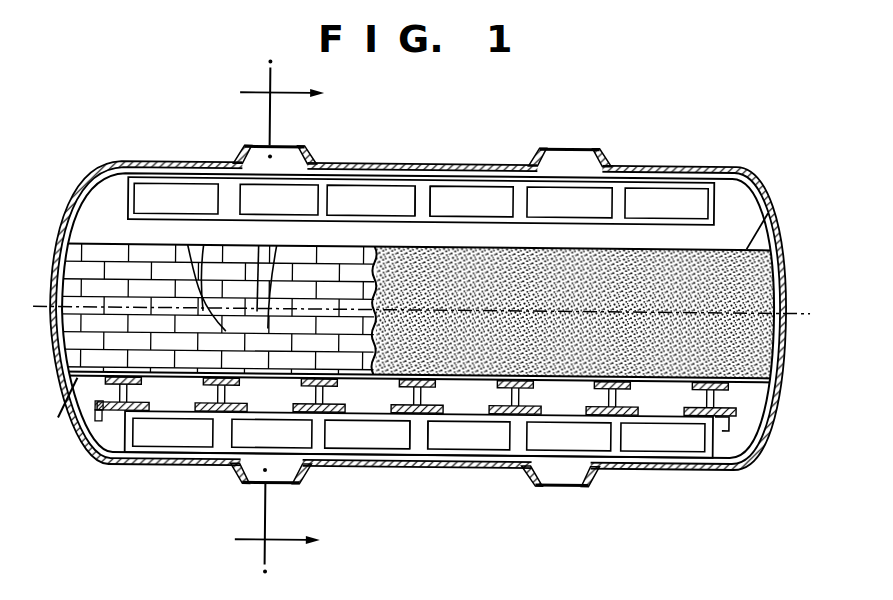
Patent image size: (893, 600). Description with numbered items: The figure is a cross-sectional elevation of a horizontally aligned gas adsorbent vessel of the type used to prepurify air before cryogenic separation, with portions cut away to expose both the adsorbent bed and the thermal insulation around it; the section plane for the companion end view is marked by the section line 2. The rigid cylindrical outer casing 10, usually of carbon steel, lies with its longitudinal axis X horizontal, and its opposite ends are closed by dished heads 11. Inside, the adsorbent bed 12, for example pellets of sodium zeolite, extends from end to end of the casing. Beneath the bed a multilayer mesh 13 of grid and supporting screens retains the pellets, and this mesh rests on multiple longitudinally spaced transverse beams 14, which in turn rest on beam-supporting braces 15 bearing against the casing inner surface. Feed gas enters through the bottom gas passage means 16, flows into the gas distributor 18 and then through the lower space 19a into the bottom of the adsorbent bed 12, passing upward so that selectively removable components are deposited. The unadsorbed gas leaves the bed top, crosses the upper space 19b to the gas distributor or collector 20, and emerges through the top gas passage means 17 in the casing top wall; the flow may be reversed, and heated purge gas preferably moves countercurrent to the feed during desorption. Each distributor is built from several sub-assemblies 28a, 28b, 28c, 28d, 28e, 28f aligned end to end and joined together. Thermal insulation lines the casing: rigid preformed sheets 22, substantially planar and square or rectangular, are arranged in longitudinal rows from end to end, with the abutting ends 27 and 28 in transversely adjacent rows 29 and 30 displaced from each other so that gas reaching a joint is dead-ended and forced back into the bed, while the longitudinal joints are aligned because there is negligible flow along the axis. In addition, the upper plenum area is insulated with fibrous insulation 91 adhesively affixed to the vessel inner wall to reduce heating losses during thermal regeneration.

The section line 2- 2 is at (280, 316).
The outer casing 10 is at (416, 309).
The dished heads 11 is at (61, 246).
The adsorbent bed 12 is at (767, 210).
The multilayer mesh 13 is at (58, 403).
The beams 14 is at (104, 406).
The beam-supporting braces 15 is at (716, 425).
The bottom gas passage means 16 is at (278, 486).
The top gas passage means 17 is at (286, 157).
The gas distributor 18 is at (628, 457).
The lower space 19a is at (444, 420).
The upper space 19b is at (441, 235).
The gas distributor 20 is at (688, 183).
The rigid preformed sheets 22 is at (215, 308).
The abutting ends 27 is at (196, 278).
The abutting ends 28 is at (216, 267).
The distributor sub-assembly 28a is at (168, 428).
The distributor sub-assembly 28b is at (270, 428).
The distributor sub-assembly 28c is at (365, 428).
The distributor sub-assembly 28d is at (465, 428).
The distributor sub-assembly 28e is at (562, 428).
The distributor sub-assembly 28f is at (660, 428).
The transversely adjacent row 29 is at (262, 267).
The transversely adjacent row 30 is at (288, 277).
The fibrous insulation 91 is at (111, 170).
The longitudinal axis x-x X is at (422, 311).